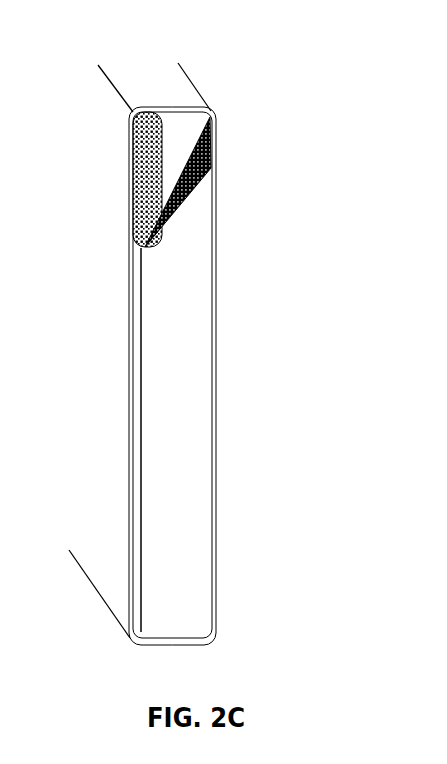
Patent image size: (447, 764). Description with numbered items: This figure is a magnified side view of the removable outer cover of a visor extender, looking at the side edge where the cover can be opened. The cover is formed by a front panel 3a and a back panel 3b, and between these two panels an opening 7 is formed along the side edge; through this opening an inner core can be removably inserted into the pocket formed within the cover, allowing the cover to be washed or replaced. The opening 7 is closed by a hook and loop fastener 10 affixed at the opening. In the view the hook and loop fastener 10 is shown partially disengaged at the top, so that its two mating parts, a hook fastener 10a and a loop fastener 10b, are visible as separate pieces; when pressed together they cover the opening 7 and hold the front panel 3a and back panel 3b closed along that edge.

The opening 7 is at (183, 125).
The hook and loop fastener 10 is at (201, 315).
The hook fastener 10a is at (141, 147).
The loop fastener 10b is at (202, 161).
The front panel 3a is at (118, 442).
The back panel 3b is at (222, 442).